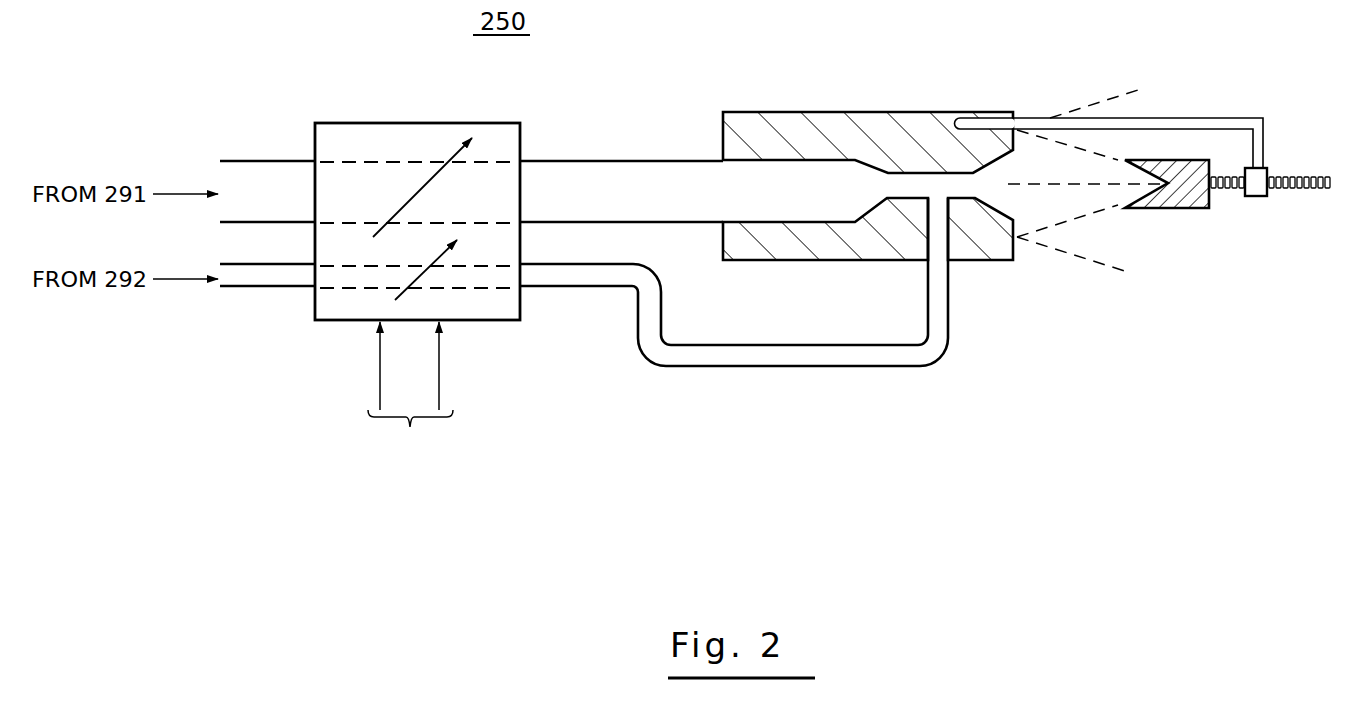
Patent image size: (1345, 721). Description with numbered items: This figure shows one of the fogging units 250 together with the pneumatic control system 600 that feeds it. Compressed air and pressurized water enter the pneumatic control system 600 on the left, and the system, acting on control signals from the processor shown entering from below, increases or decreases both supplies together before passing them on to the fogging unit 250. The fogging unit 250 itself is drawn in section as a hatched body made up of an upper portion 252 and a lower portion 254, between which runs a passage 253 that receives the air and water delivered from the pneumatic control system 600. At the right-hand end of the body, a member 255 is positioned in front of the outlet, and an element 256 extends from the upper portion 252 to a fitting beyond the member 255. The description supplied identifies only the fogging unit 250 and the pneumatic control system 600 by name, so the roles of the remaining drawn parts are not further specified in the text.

The fogging unit 250 is at (925, 207).
The upper body block 252 is at (838, 115).
The fluid passage / nozzle channel 253 is at (870, 176).
The lower body block 254 is at (935, 230).
The mirror 255 is at (1175, 208).
The optical fiber 256 is at (1178, 118).
The pneumatic control system 600 is at (389, 128).